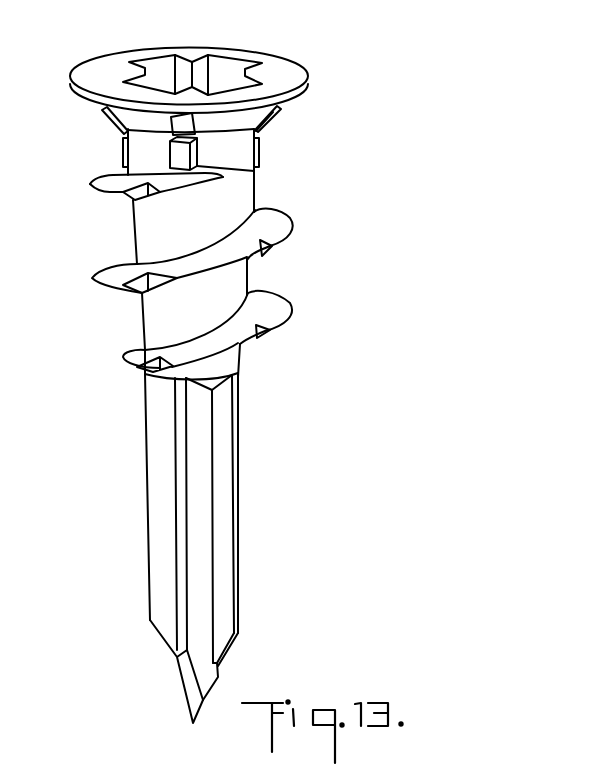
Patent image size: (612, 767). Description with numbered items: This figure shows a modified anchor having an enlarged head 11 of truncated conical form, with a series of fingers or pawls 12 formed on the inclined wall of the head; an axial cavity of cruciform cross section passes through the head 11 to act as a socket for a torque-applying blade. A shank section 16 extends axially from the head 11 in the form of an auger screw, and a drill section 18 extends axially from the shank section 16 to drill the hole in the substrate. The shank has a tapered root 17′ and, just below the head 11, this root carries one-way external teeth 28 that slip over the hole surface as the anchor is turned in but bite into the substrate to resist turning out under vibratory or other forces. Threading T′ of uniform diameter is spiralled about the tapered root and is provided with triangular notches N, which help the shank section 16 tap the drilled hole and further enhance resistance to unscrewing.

The enlarged head 11 is at (290, 70).
The fingers or pawls 12 is at (258, 131).
The one-way external teeth 28 is at (258, 152).
The threading T′ is at (83, 182).
The shank section 16 is at (128, 225).
The tapered root 17′ is at (250, 276).
The triangular notches N is at (158, 193).
The drill section 18 is at (243, 570).